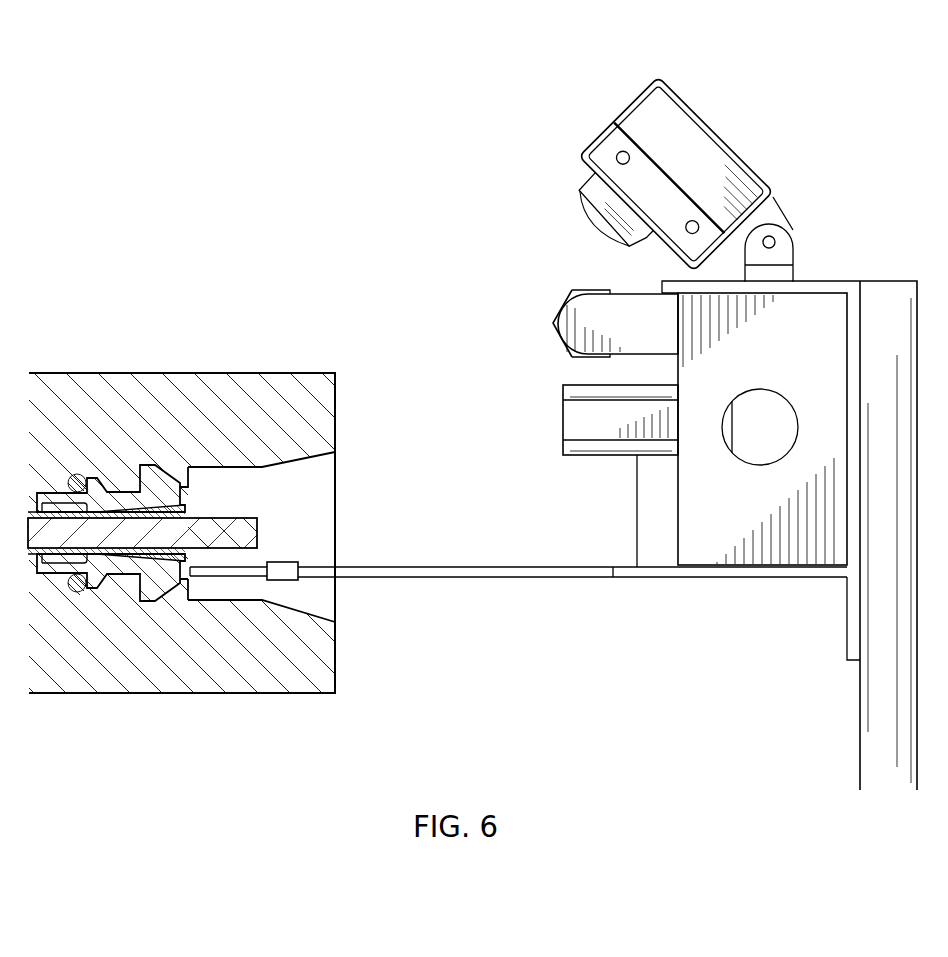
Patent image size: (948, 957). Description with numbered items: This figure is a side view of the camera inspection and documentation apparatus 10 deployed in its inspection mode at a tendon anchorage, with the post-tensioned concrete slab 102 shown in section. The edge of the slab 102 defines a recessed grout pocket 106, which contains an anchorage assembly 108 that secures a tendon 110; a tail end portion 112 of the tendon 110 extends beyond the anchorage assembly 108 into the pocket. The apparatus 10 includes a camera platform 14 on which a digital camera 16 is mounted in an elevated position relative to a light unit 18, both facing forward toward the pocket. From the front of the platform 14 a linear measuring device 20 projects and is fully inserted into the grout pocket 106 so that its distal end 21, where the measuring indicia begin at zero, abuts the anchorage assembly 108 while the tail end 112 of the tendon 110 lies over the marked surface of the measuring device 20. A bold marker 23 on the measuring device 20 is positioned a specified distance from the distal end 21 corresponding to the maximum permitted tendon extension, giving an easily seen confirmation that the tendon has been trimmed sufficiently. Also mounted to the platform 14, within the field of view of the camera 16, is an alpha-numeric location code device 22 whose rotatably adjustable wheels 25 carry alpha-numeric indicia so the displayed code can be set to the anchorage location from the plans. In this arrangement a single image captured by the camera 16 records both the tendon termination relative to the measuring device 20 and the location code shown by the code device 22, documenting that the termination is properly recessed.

The camera inspection and documentation apparatus 10 is at (525, 238).
The camera platform 14 is at (876, 281).
The digital camera 16 is at (720, 137).
The light unit 18 is at (578, 384).
The linear measuring device 20 is at (500, 566).
The distal end 21 is at (188, 582).
The alpha-numeric location code device 22 is at (588, 306).
The bold marker 23 is at (300, 565).
The rotatably adjustable wheels 25 is at (558, 323).
The post-tensioned concrete slab 102 is at (140, 372).
The recessed grout pocket 106 is at (328, 463).
The anchorage assembly 108 is at (120, 586).
The tendon 110 is at (227, 505).
The tail end portion 112 is at (258, 527).